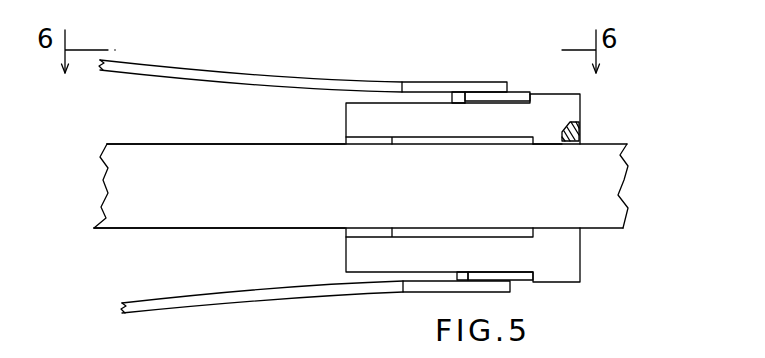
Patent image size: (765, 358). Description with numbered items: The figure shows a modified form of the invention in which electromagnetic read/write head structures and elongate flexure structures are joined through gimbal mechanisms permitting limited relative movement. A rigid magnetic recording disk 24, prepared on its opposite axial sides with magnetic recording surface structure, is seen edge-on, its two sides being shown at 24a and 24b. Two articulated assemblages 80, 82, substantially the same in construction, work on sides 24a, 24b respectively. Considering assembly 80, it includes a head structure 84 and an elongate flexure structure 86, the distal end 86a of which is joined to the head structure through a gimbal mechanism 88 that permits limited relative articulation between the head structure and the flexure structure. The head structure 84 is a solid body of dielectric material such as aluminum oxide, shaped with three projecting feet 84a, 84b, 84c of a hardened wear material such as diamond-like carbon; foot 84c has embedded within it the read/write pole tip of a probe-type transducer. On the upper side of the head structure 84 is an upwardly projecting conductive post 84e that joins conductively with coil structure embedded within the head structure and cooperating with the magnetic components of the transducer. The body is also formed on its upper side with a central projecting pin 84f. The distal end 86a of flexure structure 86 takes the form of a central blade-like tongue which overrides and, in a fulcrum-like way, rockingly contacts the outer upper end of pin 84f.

The rigid magnetic recording disk 24 is at (629, 191).
The first side of disk 24a is at (192, 143).
The second side of disk 24b is at (234, 229).
The articulated assemblage 80 is at (276, 46).
The articulated assemblage 82 is at (272, 301).
The head structure 84 is at (563, 122).
The projecting foot 84a is at (579, 142).
The projecting foot 84b is at (547, 142).
The projecting foot 84c is at (365, 141).
The conductive post 84e is at (532, 96).
The central projecting pin 84f is at (460, 103).
The elongate flexure structure 86 is at (361, 84).
The distal end of flexure structure 86a is at (450, 82).
The gimbal mechanism 88 is at (488, 104).